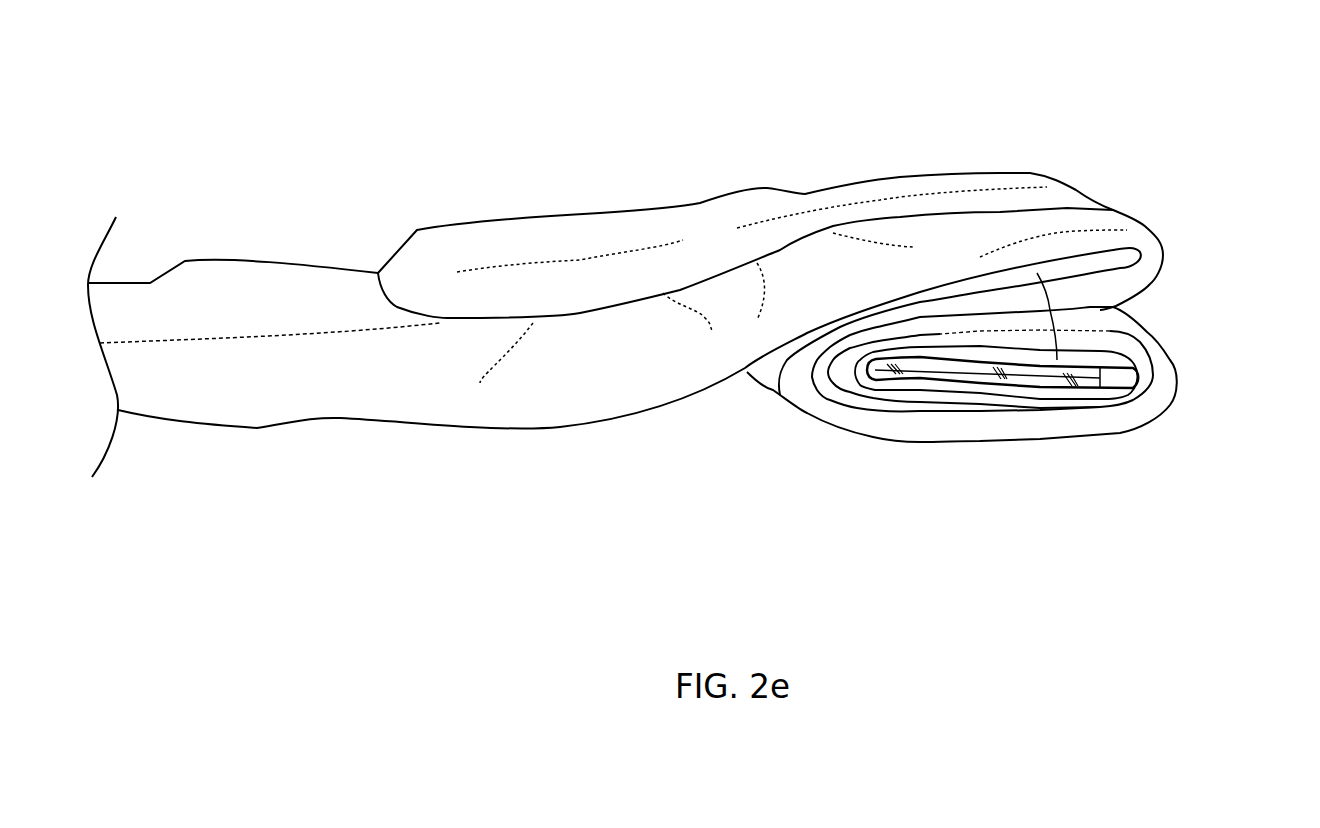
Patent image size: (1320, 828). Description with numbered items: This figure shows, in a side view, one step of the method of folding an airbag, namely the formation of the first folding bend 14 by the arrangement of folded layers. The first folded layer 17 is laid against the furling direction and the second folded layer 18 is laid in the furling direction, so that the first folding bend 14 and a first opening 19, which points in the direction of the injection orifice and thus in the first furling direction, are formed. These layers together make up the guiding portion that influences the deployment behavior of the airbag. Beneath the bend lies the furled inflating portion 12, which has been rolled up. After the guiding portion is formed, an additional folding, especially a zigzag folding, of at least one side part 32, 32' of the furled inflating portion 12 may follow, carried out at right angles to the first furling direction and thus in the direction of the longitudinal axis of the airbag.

The inflating portion 12 is at (977, 441).
The first folding bend 14 is at (1153, 240).
The first folded layer 17 is at (1104, 302).
The second folded layer 18 is at (1000, 240).
The first opening 19 is at (1057, 360).
The side part 32 is at (770, 211).
The side part 32' is at (614, 393).